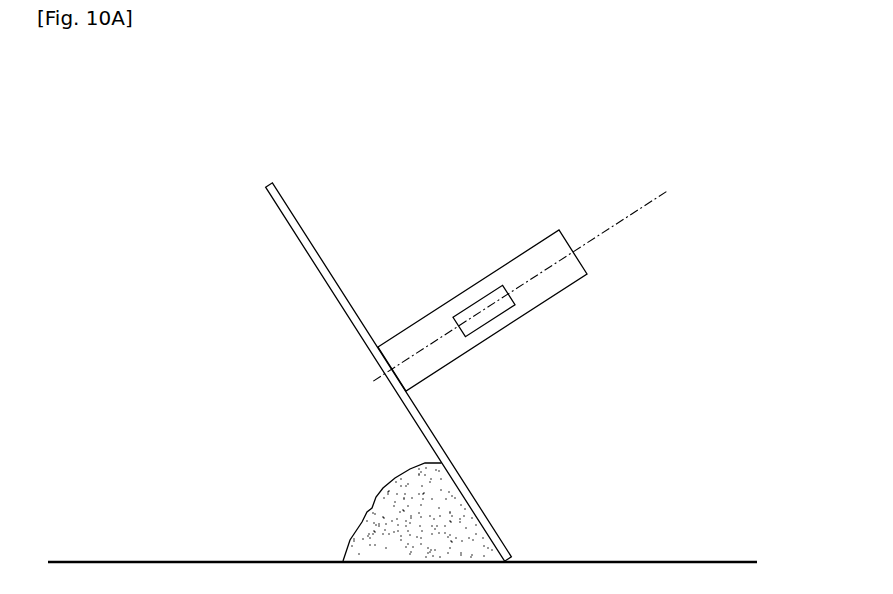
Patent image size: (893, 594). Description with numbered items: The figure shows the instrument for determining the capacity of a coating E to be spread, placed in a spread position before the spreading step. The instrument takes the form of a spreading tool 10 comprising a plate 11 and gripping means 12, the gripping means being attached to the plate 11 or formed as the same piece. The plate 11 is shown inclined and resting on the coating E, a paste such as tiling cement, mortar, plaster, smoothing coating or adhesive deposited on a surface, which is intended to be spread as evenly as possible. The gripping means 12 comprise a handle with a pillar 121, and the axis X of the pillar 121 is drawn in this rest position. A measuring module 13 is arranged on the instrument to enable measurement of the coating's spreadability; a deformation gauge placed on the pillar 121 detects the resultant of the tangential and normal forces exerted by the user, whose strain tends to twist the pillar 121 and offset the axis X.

The spreading tool 10 is at (458, 105).
The plate 11 is at (290, 190).
The gripping means 12 is at (502, 258).
The pillar 121 is at (537, 293).
The measuring module 13 is at (475, 332).
The coating E is at (377, 524).
The axis of the pillar X is at (530, 281).